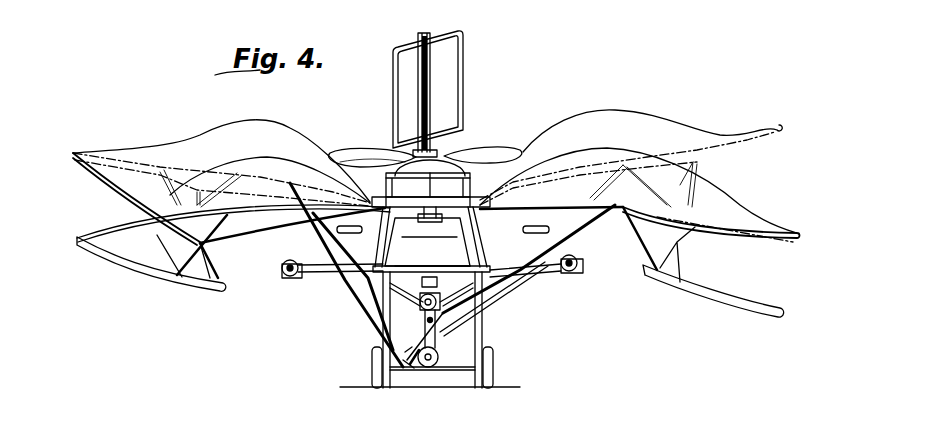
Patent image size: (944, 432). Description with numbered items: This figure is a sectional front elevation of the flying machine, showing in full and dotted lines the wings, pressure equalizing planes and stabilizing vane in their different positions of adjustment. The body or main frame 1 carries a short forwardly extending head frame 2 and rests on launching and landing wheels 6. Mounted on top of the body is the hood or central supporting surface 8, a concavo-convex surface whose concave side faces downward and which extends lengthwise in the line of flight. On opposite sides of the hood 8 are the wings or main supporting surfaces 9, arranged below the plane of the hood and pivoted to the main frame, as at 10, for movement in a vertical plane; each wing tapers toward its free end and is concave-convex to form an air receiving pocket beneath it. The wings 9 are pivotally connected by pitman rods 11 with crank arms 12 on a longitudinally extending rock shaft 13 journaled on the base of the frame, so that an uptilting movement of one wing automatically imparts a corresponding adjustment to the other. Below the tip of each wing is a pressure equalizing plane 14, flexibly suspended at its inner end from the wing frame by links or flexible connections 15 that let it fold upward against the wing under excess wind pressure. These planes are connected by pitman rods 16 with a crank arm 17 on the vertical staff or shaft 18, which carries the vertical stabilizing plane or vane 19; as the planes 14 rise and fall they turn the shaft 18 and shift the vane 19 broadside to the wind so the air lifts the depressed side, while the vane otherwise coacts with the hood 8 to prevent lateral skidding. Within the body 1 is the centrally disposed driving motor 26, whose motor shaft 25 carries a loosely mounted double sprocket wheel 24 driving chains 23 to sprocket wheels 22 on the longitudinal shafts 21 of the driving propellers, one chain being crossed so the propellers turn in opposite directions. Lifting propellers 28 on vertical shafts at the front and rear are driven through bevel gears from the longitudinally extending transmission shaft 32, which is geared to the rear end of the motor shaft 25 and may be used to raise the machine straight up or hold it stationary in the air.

The body or main frame 1 is at (528, 132).
The head frame 2 is at (430, 297).
The launching and landing wheels 6 is at (495, 363).
The hood or central supporting surface 8 is at (455, 168).
The wings or main supporting surfaces 9 is at (307, 157).
The pivot of wings 10 is at (485, 188).
The pitman rods 11 is at (363, 313).
The crank arms 12 is at (420, 362).
The rock shaft 13 is at (437, 360).
The pressure equalizing plane 14 is at (103, 198).
The links or flexible connections 15 is at (217, 270).
The pitman rods 16 is at (263, 237).
The crank arm 17 is at (440, 212).
The vertical staff or shaft 18 is at (418, 107).
The vertical stabilizing plane or vane 19 is at (430, 67).
The longitudinal shafts 21 is at (286, 277).
The sprocket wheels 22 is at (283, 260).
The chains 23 is at (322, 283).
The double sprocket wheel 24 is at (416, 327).
The motor shaft 25 is at (416, 299).
The driving motor 26 is at (448, 276).
The lifting propellers 28 is at (353, 150).
The transmission shaft 32 is at (433, 318).